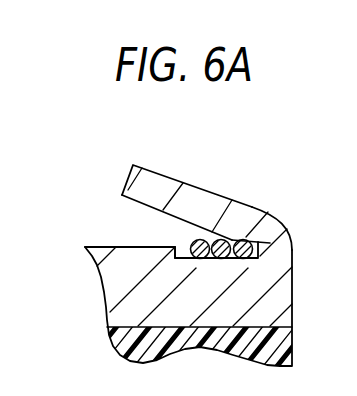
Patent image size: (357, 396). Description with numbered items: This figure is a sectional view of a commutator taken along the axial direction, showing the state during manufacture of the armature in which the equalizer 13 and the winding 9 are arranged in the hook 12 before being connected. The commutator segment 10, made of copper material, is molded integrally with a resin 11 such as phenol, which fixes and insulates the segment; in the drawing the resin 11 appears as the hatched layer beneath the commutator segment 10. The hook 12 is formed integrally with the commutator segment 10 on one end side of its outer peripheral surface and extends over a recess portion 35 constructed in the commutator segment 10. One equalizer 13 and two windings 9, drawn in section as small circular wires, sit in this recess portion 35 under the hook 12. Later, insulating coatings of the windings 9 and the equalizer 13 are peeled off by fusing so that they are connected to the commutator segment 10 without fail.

The winding 9 is at (240, 237).
The commutator segment 10 is at (103, 256).
The resin 11 is at (283, 339).
The hook 12 is at (200, 194).
The equalizer 13 is at (270, 243).
The recess portion 35 is at (182, 257).